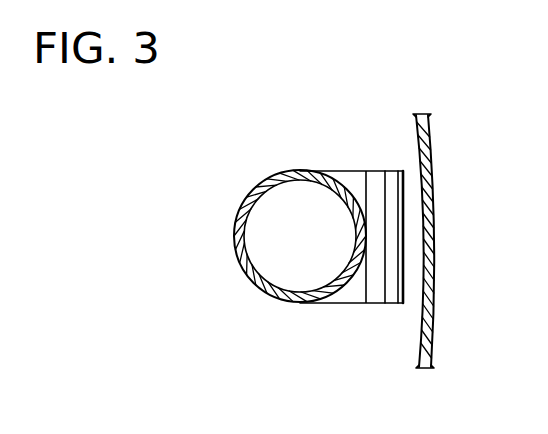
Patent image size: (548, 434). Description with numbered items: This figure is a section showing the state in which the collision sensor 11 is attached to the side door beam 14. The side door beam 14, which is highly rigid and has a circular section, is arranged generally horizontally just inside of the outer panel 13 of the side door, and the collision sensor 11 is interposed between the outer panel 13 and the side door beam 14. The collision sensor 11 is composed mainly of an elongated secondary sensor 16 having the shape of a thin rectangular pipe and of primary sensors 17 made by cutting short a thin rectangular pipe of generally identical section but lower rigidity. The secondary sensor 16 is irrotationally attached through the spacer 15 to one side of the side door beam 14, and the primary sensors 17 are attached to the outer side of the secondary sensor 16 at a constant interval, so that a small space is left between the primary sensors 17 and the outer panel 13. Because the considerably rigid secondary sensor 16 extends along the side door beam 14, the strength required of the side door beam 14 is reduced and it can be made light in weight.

The collision sensor 11 is at (398, 366).
The outer panel 13 is at (424, 198).
The side door beam 14 is at (263, 182).
The spacer 15 is at (343, 177).
The secondary sensor 16 is at (373, 295).
The primary sensors 17 is at (394, 295).